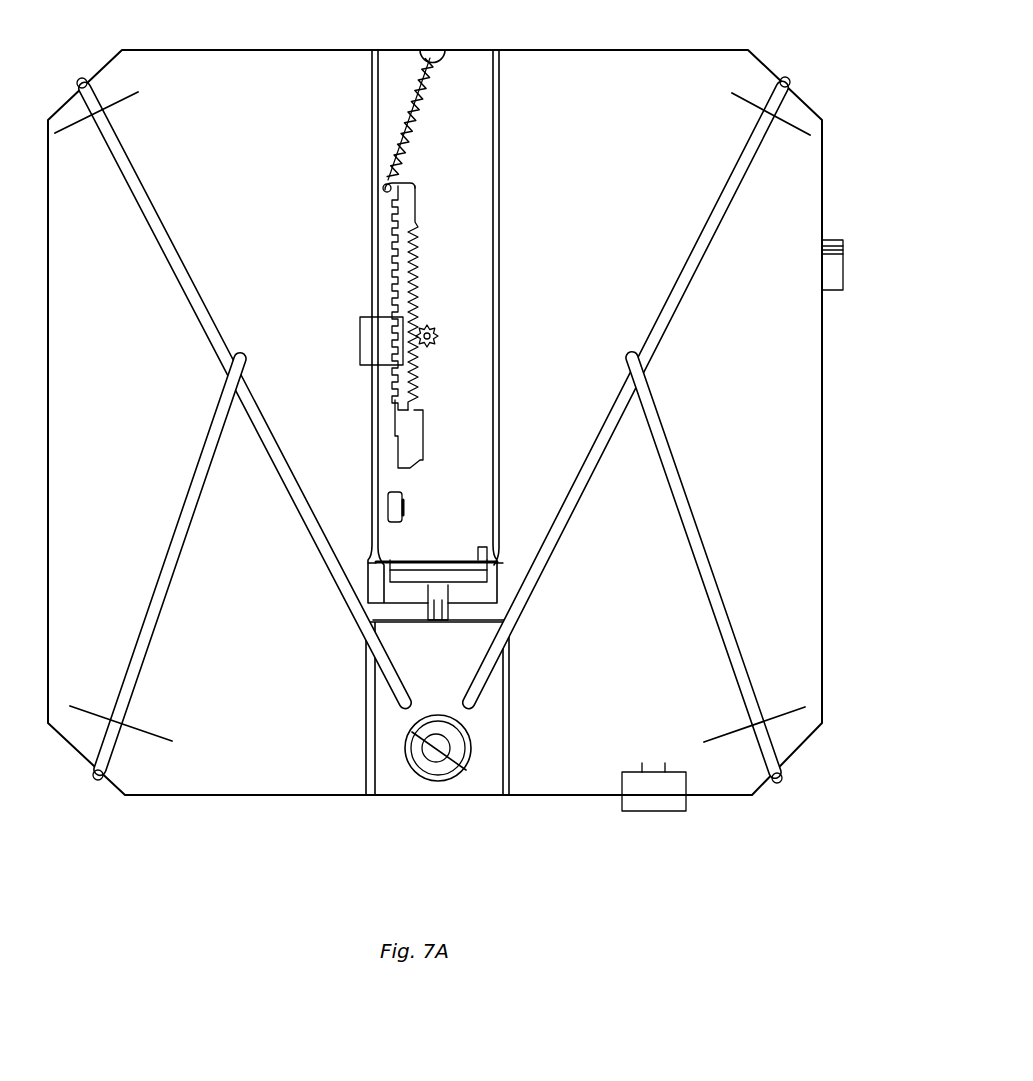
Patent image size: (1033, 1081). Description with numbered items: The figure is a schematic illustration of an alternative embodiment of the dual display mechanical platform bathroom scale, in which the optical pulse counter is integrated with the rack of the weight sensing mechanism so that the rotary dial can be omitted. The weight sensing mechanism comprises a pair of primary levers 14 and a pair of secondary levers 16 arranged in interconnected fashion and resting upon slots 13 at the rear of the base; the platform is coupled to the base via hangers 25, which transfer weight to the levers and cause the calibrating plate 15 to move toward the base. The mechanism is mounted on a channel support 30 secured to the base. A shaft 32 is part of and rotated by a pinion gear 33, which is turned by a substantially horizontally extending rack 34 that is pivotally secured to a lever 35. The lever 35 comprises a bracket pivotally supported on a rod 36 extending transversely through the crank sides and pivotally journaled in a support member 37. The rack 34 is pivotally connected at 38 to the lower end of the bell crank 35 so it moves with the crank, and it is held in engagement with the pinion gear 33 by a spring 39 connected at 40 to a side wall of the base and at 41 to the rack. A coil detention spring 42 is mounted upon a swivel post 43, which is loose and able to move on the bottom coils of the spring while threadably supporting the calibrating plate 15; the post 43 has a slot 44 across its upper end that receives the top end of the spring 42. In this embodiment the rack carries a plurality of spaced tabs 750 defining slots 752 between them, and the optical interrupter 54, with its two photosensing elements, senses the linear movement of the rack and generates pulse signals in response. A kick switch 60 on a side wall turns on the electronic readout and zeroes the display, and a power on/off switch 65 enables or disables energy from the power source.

The slots 13 is at (82, 78).
The primary levers 14 is at (193, 278).
The calibrating plate 15 is at (490, 727).
The secondary levers 16 is at (185, 538).
The hangers 25 is at (120, 100).
The channel support 30 is at (499, 233).
The shaft 32 is at (436, 326).
The pinion gear 33 is at (432, 336).
The rack 34 is at (413, 448).
The lever 35 is at (398, 488).
The rod 36 is at (423, 580).
The support member 37 is at (490, 556).
The pivotal connection 38 is at (441, 608).
The spring 39 is at (420, 100).
The spring connection to base 40 is at (434, 50).
The spring connection to rack 41 is at (384, 188).
The coil detention spring 42 is at (410, 760).
The swivel post 43 is at (450, 740).
The slot 44 is at (442, 756).
The optical interrupter 54 is at (360, 350).
The kick switch 60 is at (686, 780).
The power on/off switch 65 is at (845, 268).
The tabs 750 is at (392, 236).
The slots 752 is at (392, 276).